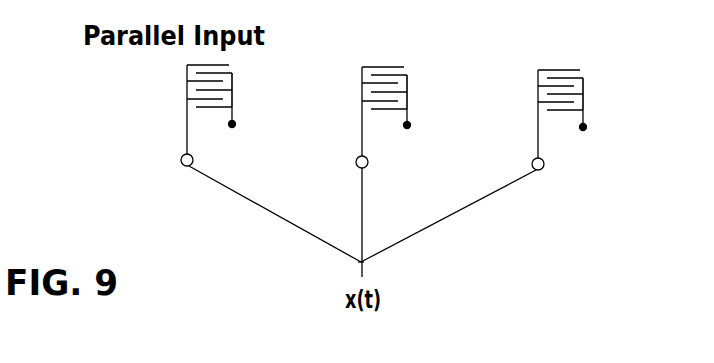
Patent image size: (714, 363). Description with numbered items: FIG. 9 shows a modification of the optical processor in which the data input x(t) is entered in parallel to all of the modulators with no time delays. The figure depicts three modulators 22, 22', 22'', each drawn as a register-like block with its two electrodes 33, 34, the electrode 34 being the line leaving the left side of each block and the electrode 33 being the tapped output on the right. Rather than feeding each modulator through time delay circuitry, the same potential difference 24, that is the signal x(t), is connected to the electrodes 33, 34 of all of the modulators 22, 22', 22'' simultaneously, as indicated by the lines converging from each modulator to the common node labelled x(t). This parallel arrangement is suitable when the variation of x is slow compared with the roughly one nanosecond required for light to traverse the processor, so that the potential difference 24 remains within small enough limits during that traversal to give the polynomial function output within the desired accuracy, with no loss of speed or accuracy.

The modulator 22 is at (242, 83).
The modulator 22' is at (427, 84).
The modulator 22'' is at (607, 85).
The electrode 33 is at (233, 107).
The electrode 34 is at (187, 108).
The potential difference 24 is at (358, 273).